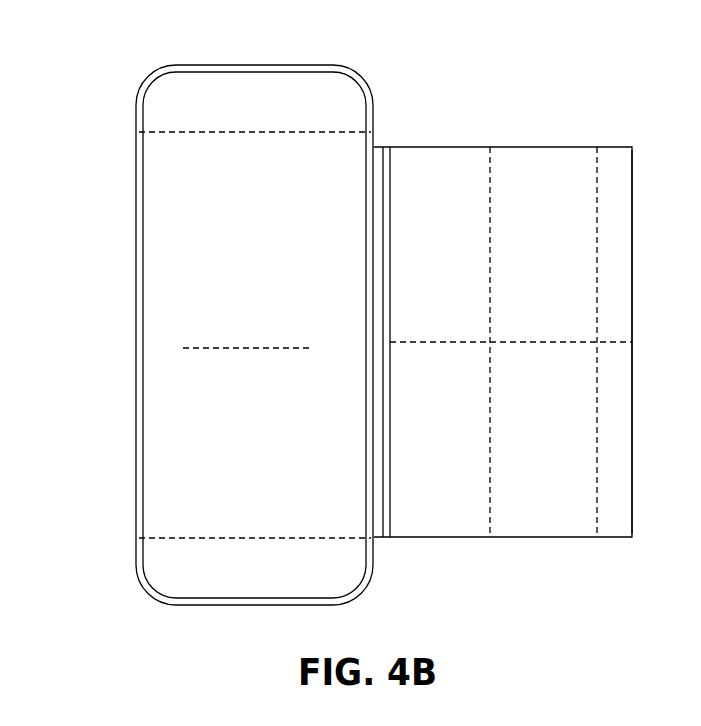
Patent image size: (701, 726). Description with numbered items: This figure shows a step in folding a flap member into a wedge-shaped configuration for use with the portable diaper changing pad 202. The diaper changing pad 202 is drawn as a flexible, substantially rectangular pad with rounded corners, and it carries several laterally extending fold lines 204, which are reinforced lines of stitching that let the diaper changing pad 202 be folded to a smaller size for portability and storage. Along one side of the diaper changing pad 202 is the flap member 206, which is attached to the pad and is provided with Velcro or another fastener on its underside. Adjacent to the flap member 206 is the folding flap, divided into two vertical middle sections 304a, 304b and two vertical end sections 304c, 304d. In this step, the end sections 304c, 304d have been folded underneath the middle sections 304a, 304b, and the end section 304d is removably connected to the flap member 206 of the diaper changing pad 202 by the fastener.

The diaper changing pad 202 is at (373, 105).
The fold lines 204 is at (180, 131).
The flap member 206 is at (377, 145).
The vertical middle section 304a is at (462, 253).
The vertical middle section 304b is at (573, 253).
The vertical end section 304c is at (642, 235).
The vertical end section 304d is at (390, 160).